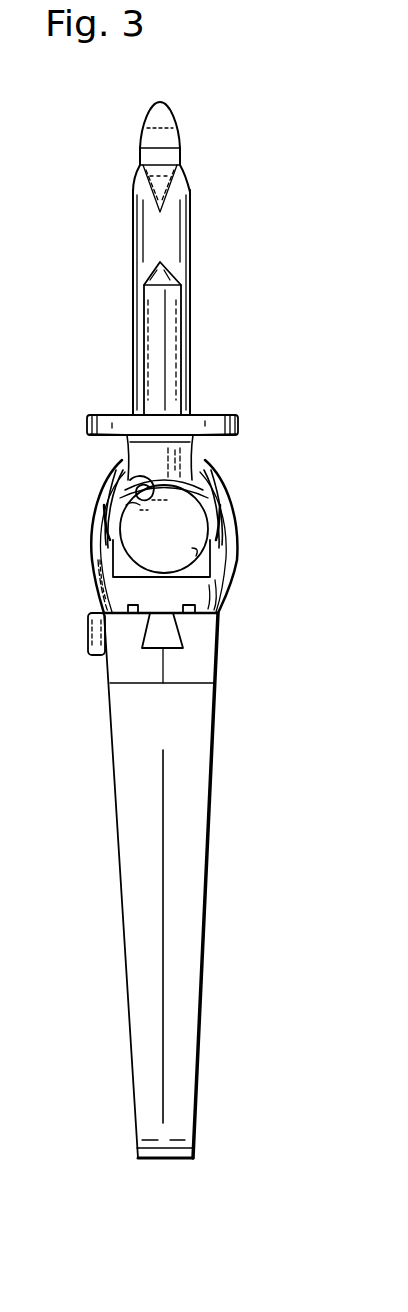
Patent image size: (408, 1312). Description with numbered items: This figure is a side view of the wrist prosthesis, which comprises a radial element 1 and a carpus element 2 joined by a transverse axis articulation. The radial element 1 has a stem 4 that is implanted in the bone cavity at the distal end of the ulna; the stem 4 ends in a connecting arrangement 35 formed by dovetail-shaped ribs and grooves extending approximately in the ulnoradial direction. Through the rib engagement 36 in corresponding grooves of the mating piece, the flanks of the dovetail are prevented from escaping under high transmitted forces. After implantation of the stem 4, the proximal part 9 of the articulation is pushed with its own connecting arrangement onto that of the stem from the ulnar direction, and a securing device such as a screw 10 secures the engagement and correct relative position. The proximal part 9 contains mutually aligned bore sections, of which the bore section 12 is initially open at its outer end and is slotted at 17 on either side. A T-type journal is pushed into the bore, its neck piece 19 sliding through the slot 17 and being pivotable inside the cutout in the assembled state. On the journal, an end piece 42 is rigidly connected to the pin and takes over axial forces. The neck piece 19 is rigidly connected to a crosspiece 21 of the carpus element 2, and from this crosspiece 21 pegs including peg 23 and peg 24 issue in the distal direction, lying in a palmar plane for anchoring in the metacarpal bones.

The radial element 1 is at (106, 798).
The carpus element 2 is at (118, 216).
The stem 4 is at (145, 942).
The proximal part of the transverse axis articulation 9 is at (226, 592).
The screw 10 is at (92, 650).
The bore section 12 is at (205, 552).
The slot 17 is at (150, 472).
The neck piece 19 is at (195, 455).
The crosspiece 21 is at (218, 416).
The peg 23 is at (162, 142).
The peg 24 is at (158, 318).
The connecting arrangement 35 is at (178, 631).
The rib engagement 36 is at (195, 627).
The end piece 42 is at (145, 555).